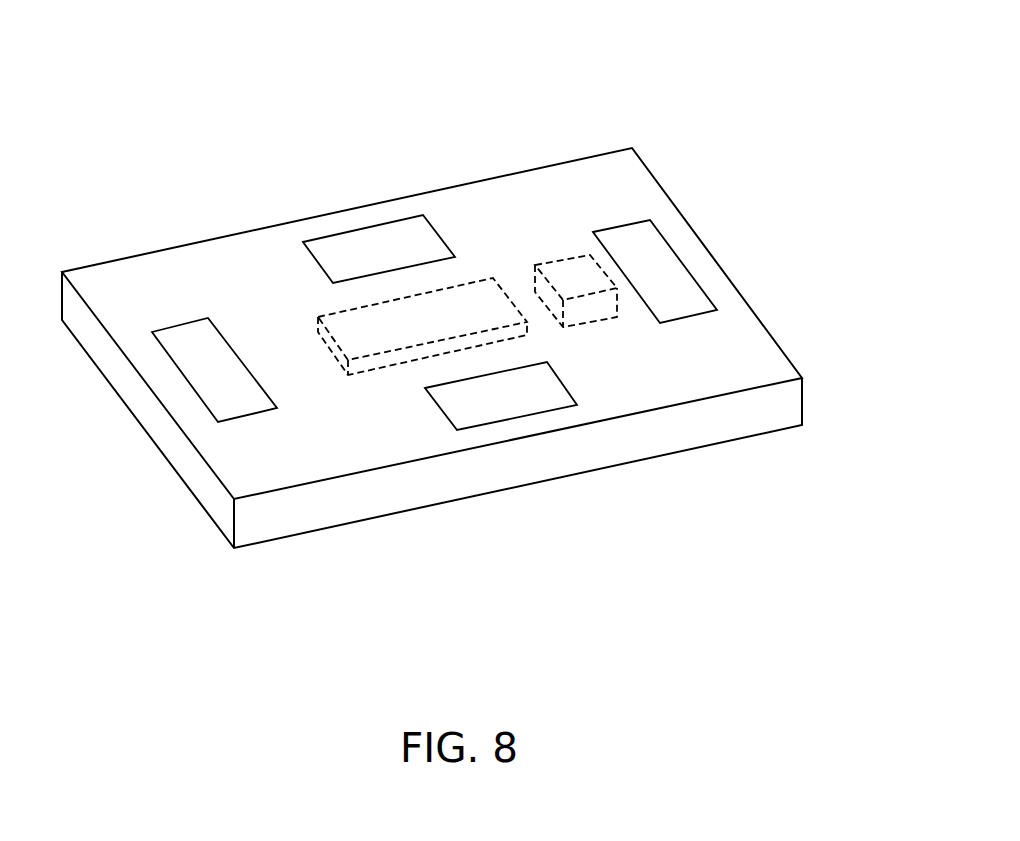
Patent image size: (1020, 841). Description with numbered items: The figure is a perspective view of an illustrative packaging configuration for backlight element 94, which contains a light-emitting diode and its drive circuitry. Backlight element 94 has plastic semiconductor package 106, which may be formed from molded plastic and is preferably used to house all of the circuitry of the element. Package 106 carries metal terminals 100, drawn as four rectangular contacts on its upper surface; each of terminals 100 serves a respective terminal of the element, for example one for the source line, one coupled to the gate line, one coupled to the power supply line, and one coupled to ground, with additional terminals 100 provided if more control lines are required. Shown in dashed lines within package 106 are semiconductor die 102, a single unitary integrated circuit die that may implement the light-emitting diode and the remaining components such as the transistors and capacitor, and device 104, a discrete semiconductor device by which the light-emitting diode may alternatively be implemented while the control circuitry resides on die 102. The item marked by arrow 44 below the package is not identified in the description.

The backlight element 94 is at (655, 51).
The printed circuit board 44 is at (398, 543).
The metal terminals 100 is at (363, 247).
The semiconductor die 102 is at (481, 283).
The discrete semiconductor device 104 is at (597, 318).
The plastic semiconductor package 106 is at (172, 273).